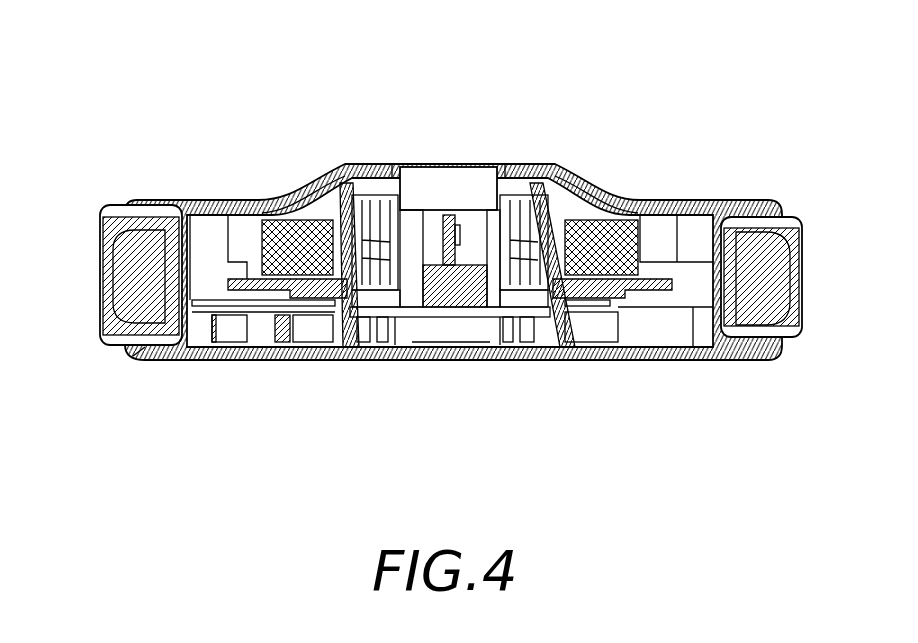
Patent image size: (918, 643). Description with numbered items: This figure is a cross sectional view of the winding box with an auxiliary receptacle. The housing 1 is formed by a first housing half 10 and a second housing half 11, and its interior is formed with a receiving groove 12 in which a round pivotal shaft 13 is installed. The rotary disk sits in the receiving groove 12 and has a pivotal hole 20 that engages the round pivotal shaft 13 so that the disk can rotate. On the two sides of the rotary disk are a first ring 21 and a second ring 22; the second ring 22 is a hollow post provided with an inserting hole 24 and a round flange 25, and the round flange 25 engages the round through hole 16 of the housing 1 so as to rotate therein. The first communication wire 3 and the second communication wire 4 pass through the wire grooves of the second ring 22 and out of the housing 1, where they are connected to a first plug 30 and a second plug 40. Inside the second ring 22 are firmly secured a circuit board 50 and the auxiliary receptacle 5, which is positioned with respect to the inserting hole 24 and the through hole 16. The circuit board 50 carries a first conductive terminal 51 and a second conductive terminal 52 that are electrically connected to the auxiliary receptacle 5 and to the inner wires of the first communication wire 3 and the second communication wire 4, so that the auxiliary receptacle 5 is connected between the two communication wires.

The housing 1 is at (712, 194).
The first communication wire 3 is at (578, 185).
The second communication wire 4 is at (612, 185).
The auxiliary receptacle 5 is at (465, 300).
The first housing half 10 is at (226, 238).
The second housing half 11 is at (172, 362).
The receiving groove 12 is at (224, 242).
The round pivotal shaft 13 is at (406, 350).
The round through hole 16 is at (540, 183).
The pivotal hole 20 is at (452, 325).
The first ring 21 is at (345, 347).
The second ring 22 is at (330, 162).
The inserting hole 24 is at (440, 183).
The round flange 25 is at (368, 170).
The first plug 30 is at (130, 268).
The second plug 40 is at (770, 278).
The circuit board 50 is at (510, 320).
The first conductive terminal 51 is at (372, 185).
The second conductive terminal 52 is at (503, 230).